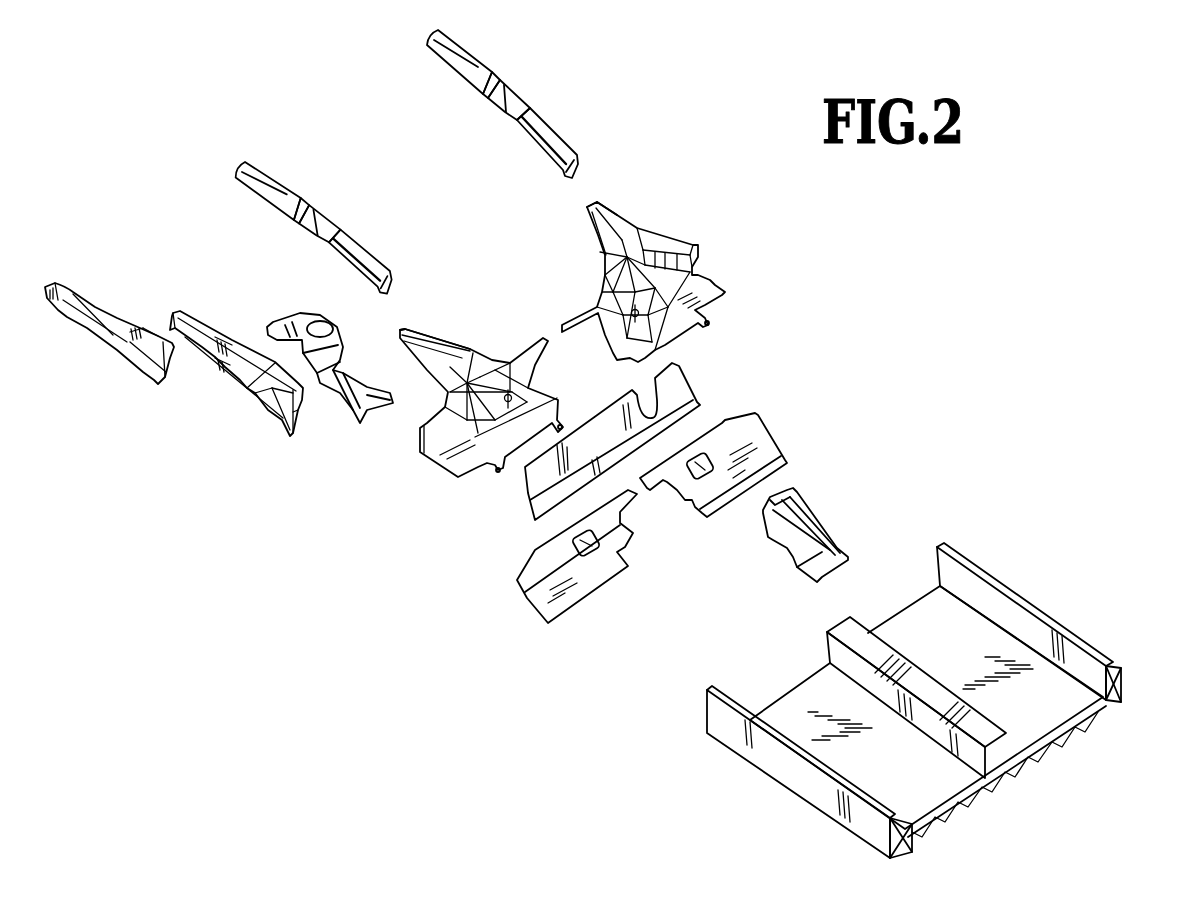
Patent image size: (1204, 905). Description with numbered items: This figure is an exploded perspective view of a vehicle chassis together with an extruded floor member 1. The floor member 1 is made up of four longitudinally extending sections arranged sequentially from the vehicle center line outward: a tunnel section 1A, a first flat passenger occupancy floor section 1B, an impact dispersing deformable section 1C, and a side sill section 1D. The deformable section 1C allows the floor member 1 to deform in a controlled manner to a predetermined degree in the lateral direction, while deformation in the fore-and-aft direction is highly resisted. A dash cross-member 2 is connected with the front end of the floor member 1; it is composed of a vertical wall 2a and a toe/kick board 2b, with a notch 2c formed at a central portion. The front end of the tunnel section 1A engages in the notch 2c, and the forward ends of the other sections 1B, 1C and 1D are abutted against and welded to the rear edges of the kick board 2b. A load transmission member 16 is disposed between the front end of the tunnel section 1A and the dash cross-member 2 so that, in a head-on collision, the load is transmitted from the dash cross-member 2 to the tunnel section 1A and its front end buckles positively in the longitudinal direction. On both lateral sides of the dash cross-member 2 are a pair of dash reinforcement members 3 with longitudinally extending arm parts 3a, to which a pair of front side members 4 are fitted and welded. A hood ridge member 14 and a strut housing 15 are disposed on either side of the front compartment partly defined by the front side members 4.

The floor member 1 is at (935, 663).
The tunnel section 1A is at (927, 683).
The first flat passenger occupancy floor section 1B is at (1008, 718).
The impact dispersing deformable section 1C is at (1052, 690).
The side sill section 1D is at (797, 778).
The dash cross-member 2 is at (586, 493).
The vertical wall 2a is at (530, 513).
The toe/kick board 2b is at (517, 563).
The notch 2c is at (620, 535).
The dash reinforcement member 3 is at (708, 278).
The arm part 3a is at (433, 337).
The front side member 4 is at (476, 58).
The hood ridge member 14 is at (183, 357).
The strut housing 15 is at (290, 313).
The load transmission member 16 is at (817, 514).